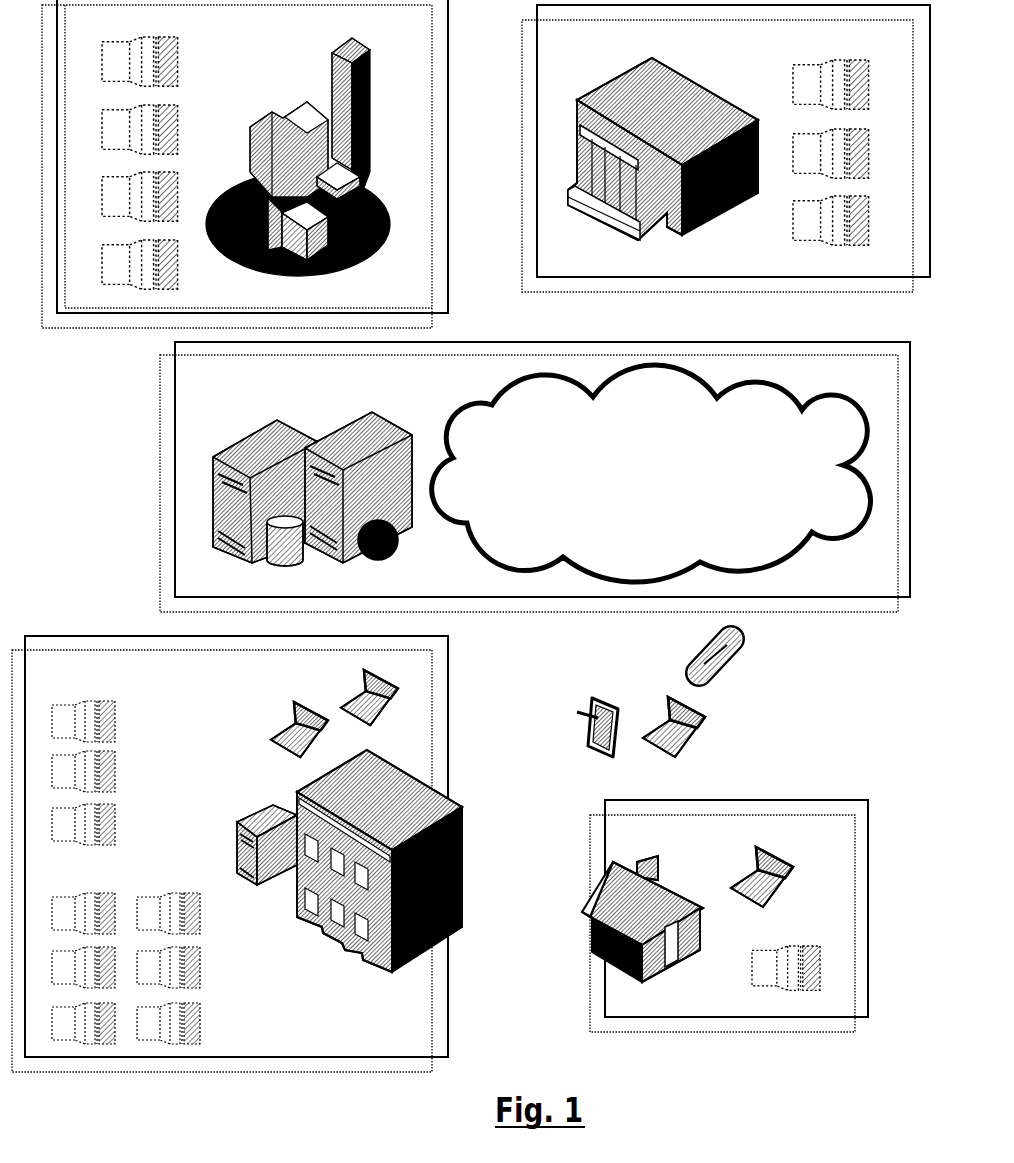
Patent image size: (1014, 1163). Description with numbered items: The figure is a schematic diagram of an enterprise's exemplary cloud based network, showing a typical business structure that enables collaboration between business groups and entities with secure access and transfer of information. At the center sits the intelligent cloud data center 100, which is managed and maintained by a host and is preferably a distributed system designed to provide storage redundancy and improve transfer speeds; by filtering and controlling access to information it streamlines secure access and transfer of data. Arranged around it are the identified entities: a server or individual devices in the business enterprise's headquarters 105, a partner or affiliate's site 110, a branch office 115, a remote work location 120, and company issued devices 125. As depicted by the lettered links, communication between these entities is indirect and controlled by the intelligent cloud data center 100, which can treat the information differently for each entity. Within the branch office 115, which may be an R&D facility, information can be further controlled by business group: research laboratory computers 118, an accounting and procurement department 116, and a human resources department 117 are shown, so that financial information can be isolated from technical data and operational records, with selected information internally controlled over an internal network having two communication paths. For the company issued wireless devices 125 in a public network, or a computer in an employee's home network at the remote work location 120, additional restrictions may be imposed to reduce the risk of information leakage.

The intelligent cloud data center 100 is at (228, 411).
The business enterprise's headquarters 105 is at (408, 34).
The partner or affiliate's site 110 is at (588, 56).
The branch office 115 is at (237, 854).
The accounting and procurement department 116 is at (106, 773).
The human resources department 117 is at (147, 968).
The research laboratory computers 118 is at (347, 713).
The remote work location 120 is at (657, 840).
The company issued devices 125 is at (668, 653).